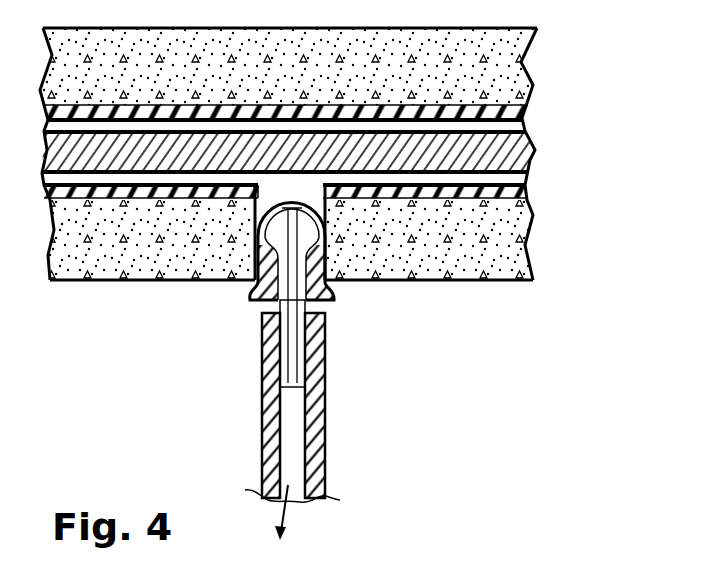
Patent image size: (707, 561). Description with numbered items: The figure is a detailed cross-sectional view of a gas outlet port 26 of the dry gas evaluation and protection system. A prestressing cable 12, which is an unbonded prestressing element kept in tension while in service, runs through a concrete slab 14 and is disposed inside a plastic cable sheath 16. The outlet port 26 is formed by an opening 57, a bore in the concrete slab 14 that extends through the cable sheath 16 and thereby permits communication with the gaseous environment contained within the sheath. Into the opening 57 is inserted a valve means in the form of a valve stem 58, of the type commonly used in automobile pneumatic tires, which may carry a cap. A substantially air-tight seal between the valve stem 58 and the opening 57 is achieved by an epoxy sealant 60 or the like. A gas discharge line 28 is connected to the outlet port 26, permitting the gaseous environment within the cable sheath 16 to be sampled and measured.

The prestressing cable 12 is at (533, 146).
The concrete slab 14 is at (522, 62).
The cable sheath 16 is at (522, 111).
The gas outlet port 26 is at (317, 372).
The gas discharge line 28 is at (295, 453).
The opening 57 is at (283, 190).
The valve stem 58 is at (290, 350).
The epoxy sealant 60 is at (334, 296).